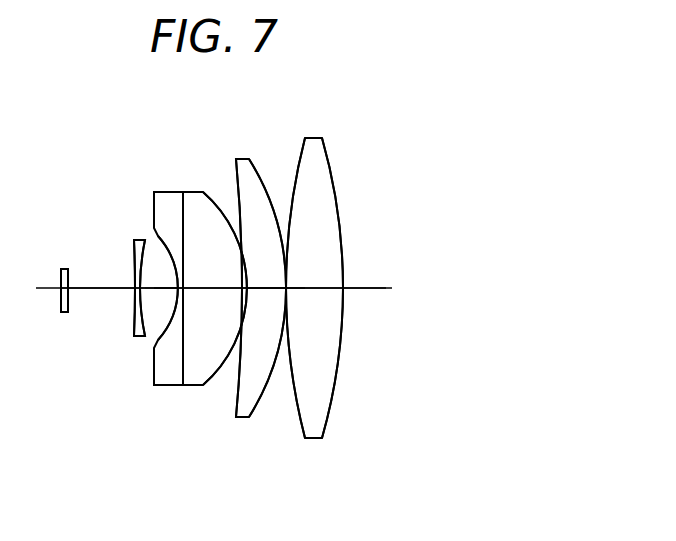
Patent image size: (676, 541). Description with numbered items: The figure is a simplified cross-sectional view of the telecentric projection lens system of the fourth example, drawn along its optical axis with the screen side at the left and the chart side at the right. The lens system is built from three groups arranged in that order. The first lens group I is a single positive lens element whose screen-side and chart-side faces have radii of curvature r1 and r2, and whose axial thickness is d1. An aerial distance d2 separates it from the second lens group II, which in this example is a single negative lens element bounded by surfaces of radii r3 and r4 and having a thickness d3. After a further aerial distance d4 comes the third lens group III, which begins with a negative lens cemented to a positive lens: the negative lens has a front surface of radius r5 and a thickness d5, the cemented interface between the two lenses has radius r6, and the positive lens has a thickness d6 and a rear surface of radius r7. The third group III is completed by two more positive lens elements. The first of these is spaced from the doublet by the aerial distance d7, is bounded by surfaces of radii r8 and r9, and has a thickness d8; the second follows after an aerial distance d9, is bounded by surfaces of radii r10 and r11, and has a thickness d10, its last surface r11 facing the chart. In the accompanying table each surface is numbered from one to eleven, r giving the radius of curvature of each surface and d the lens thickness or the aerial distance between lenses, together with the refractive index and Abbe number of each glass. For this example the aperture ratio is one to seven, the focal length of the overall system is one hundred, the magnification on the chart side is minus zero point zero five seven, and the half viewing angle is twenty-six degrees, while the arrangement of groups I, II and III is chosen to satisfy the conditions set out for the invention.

The radius of curvature of surface one r1 is at (61, 272).
The radius of curvature of surface two r2 is at (68, 272).
The radius of curvature of surface three r3 is at (133, 241).
The radius of curvature of surface four r4 is at (141, 241).
The radius of curvature of surface five r5 is at (158, 238).
The radius of curvature of surface six r6 is at (184, 215).
The radius of curvature of surface seven r7 is at (206, 196).
The radius of curvature of surface eight r8 is at (238, 189).
The radius of curvature of surface nine r9 is at (251, 162).
The radius of curvature of surface ten r10 is at (298, 186).
The radius of curvature of surface eleven r11 is at (325, 153).
The lens thickness d1 is at (64, 313).
The aerial distance d2 is at (97, 289).
The lens thickness d3 is at (138, 337).
The aerial distance d4 is at (152, 289).
The lens thickness d5 is at (173, 289).
The lens thickness d6 is at (202, 289).
The aerial distance d7 is at (265, 289).
The lens thickness d8 is at (279, 289).
The aerial distance d9 is at (320, 289).
The lens thickness d10 is at (340, 320).
The first lens group I is at (37, 485).
The second lens group II is at (149, 485).
The third lens group III is at (386, 485).